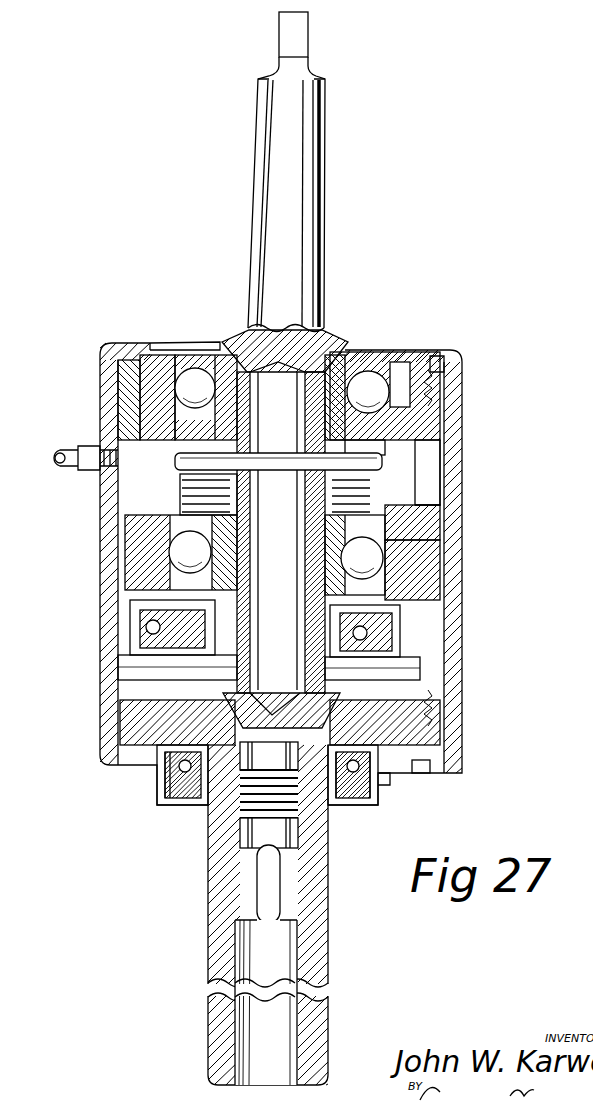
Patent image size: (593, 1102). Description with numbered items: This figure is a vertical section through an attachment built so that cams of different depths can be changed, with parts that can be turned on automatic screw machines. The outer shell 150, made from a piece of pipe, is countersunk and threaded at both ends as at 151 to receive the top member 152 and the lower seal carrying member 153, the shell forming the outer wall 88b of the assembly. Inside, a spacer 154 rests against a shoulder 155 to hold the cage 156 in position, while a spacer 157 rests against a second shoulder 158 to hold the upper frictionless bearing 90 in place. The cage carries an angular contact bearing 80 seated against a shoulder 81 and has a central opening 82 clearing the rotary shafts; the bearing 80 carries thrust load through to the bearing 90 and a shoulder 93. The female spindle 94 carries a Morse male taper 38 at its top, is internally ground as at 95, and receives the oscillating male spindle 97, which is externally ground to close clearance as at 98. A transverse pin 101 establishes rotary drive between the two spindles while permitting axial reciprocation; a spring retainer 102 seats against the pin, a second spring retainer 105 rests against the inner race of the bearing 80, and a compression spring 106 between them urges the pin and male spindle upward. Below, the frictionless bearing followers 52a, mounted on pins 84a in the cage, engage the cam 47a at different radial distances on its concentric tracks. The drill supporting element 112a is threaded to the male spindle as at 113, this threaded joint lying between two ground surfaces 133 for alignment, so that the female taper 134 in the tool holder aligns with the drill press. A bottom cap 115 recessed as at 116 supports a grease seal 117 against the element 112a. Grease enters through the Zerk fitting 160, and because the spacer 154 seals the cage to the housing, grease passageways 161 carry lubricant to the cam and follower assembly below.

The Morse male taper 38 is at (324, 180).
The female spindle 94 is at (326, 334).
The shoulder 93 is at (230, 345).
The internally ground surface 95 is at (190, 352).
The housing 88b is at (126, 345).
The upper frictionless bearing 90 is at (400, 350).
The top member 152 is at (465, 360).
The internal threads 151 is at (445, 402).
The spacer 157 is at (442, 442).
The outer shell 150 is at (455, 462).
The shoulder 155 is at (440, 510).
The spacer 154 is at (430, 531).
The second spring retainer 105 is at (432, 550).
The cage 156 is at (440, 578).
The frictionless bearing followers 52a is at (400, 632).
The ring 84a is at (420, 666).
The cam 47a is at (440, 702).
The lower seal carrying member 153 is at (445, 772).
The recess 116 is at (380, 788).
The bottom cap 115 is at (374, 800).
The grease seal 117 is at (378, 810).
The oscillating male spindle 97 is at (300, 786).
The shank 112a is at (310, 876).
The female taper 134 is at (290, 956).
The Zerk grease fitting 160 is at (80, 447).
The angular contact bearing 80 is at (180, 526).
The shoulder 81 is at (200, 576).
The grease passageways 161 is at (130, 602).
The central opening 82 is at (212, 621).
The externally ground surface 98 is at (200, 657).
The ground surfaces 133 is at (170, 782).
The threaded connection 113 is at (210, 812).
The pin 101 is at (180, 470).
The spring retainer 102 is at (186, 492).
The second shoulder 158 is at (425, 448).
The compression spring 106 is at (356, 502).